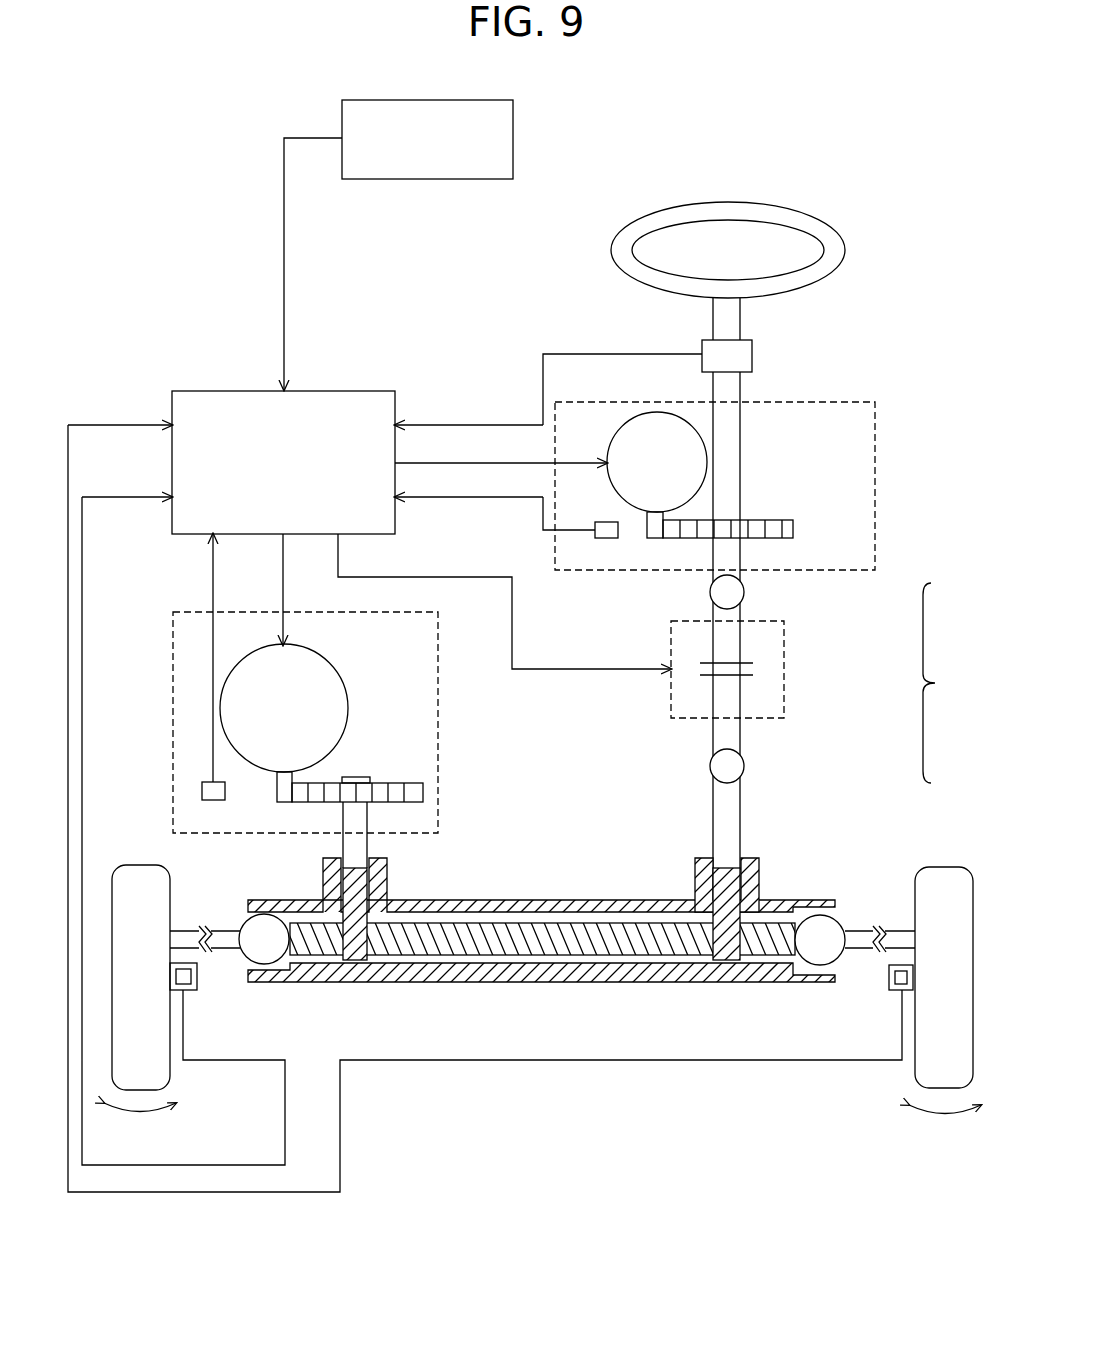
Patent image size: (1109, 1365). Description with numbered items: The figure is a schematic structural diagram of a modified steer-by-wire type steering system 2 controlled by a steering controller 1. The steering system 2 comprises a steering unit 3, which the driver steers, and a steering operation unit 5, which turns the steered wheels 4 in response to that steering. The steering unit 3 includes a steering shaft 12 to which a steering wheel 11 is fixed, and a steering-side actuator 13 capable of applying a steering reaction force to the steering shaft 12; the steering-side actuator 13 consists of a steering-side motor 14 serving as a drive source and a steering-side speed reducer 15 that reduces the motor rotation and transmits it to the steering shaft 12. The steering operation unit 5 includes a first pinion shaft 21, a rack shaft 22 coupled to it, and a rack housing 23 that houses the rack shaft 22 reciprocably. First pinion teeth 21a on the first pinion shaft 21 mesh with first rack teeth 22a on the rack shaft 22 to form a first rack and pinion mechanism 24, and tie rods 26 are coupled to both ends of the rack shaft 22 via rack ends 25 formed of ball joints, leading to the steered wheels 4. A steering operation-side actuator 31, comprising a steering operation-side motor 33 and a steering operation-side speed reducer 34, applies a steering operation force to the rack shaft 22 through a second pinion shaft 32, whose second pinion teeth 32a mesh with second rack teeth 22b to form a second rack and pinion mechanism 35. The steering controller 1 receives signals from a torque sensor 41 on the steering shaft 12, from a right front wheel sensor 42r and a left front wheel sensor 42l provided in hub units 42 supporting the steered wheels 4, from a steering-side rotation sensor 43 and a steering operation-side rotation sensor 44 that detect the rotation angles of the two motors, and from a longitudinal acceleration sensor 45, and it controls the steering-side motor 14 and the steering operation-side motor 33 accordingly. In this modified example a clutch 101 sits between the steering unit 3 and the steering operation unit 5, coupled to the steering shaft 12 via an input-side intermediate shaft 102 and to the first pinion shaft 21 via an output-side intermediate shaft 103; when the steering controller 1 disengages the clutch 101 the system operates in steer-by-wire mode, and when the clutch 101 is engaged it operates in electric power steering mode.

The steering controller 1 is at (343, 386).
The steer-by-wire type steering system 2 is at (154, 326).
The steering unit 3 is at (864, 581).
The steered wheels 4 is at (138, 863).
The steering operation unit 5 is at (863, 782).
The steering wheel 11 is at (848, 253).
The steering shaft 12 is at (742, 392).
The steering-side actuator 13 is at (847, 401).
The steering-side motor 14 is at (616, 432).
The steering-side speed reducer 15 is at (676, 550).
The first pinion shaft 21 is at (742, 816).
The first pinion teeth 21a is at (737, 897).
The rack shaft 22 is at (541, 938).
The first rack teeth 22a is at (688, 950).
The second rack teeth 22b is at (413, 950).
The rack housing 23 is at (605, 898).
The first rack and pinion mechanism 24 is at (745, 964).
The rack ends 25 is at (264, 948).
The tie rods 26 is at (230, 946).
The steering operation-side actuator 31 is at (412, 607).
The second pinion shaft 32 is at (368, 848).
The second pinion teeth 32a is at (360, 900).
The steering operation-side motor 33 is at (344, 673).
The steering operation-side speed reducer 34 is at (303, 808).
The second rack and pinion mechanism 35 is at (342, 962).
The torque sensor 41 is at (755, 358).
The hub units 42 is at (539, 986).
The left front wheel sensor 42l is at (165, 985).
The right front wheel sensor 42r is at (915, 985).
The steering-side rotation sensor 43 is at (607, 540).
The steering operation-side rotation sensor 44 is at (213, 802).
The longitudinal acceleration sensor 45 is at (516, 144).
The clutch 101 is at (788, 672).
The input-side intermediate shaft 102 is at (745, 598).
The output-side intermediate shaft 103 is at (745, 752).